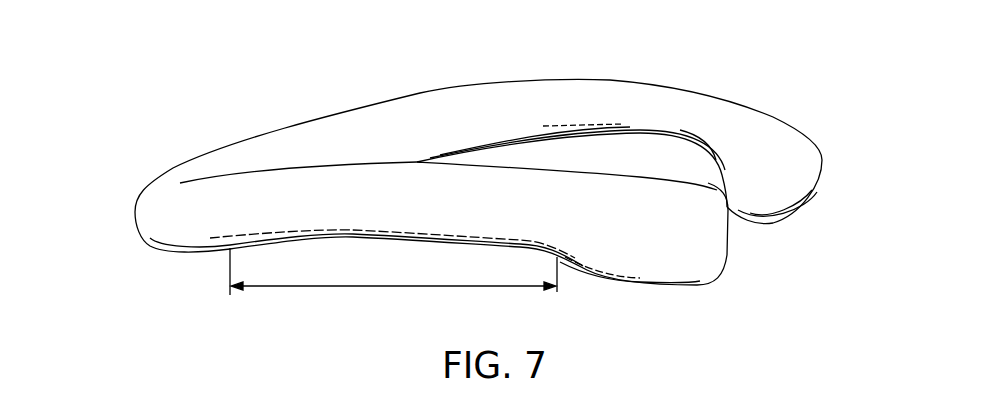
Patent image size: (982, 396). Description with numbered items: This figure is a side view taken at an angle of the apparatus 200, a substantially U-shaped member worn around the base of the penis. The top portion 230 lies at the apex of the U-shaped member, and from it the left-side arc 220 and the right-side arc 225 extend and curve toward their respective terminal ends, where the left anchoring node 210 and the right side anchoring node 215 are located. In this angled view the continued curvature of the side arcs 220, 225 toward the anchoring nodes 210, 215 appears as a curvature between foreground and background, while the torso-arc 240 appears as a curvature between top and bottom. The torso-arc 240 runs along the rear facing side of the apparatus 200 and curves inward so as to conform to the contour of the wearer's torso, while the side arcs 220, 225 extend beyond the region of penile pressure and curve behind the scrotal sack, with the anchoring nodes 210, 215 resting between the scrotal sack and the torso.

The apparatus 200 is at (345, 73).
The left anchoring node 210 is at (768, 152).
The right side anchoring node 215 is at (685, 242).
The left-side arc 220 is at (613, 80).
The right-side arc 225 is at (370, 195).
The top portion 230 is at (134, 219).
The torso-arc 240 is at (345, 290).